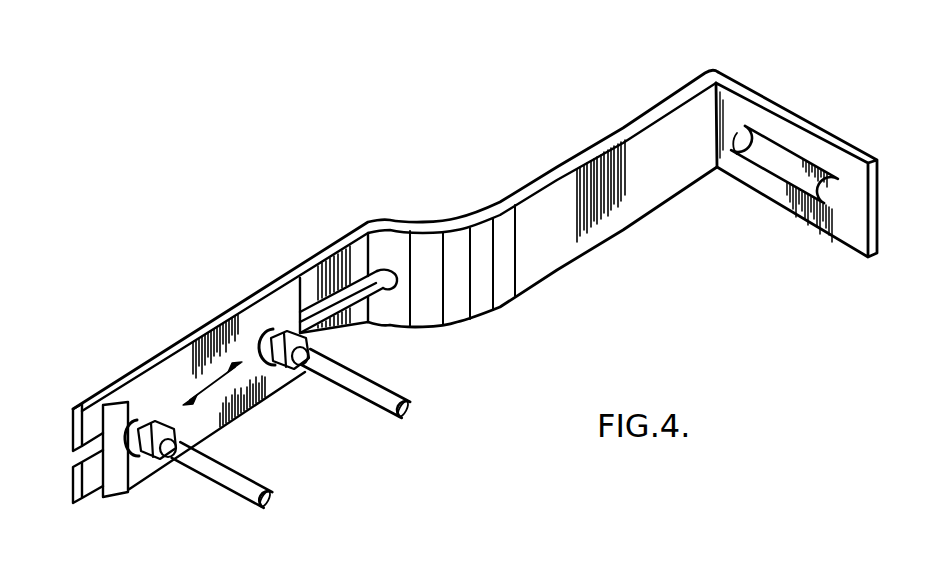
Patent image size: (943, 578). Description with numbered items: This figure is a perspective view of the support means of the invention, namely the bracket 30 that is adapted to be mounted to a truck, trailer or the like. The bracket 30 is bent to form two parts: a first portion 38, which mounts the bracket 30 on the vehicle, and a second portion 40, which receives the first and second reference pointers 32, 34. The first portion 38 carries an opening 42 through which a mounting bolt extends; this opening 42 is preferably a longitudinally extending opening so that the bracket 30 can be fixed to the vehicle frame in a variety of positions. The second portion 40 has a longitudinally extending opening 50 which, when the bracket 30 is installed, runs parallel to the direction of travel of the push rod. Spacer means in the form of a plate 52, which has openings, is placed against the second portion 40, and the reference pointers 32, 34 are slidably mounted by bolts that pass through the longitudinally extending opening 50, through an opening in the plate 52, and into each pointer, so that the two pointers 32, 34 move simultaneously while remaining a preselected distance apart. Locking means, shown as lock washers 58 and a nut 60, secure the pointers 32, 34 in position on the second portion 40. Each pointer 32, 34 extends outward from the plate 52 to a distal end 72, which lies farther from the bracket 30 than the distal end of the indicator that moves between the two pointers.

The bracket 30 is at (452, 201).
The first reference pointer 32 is at (398, 400).
The second reference pointer 34 is at (253, 478).
The first portion 38 is at (736, 82).
The second portion 40 is at (220, 312).
The opening 42 is at (787, 157).
The longitudinally extending opening 50 is at (302, 300).
The plate 52 is at (165, 380).
The lock washers 58 is at (112, 386).
The nut 60 is at (145, 464).
The distal end 72 is at (414, 420).